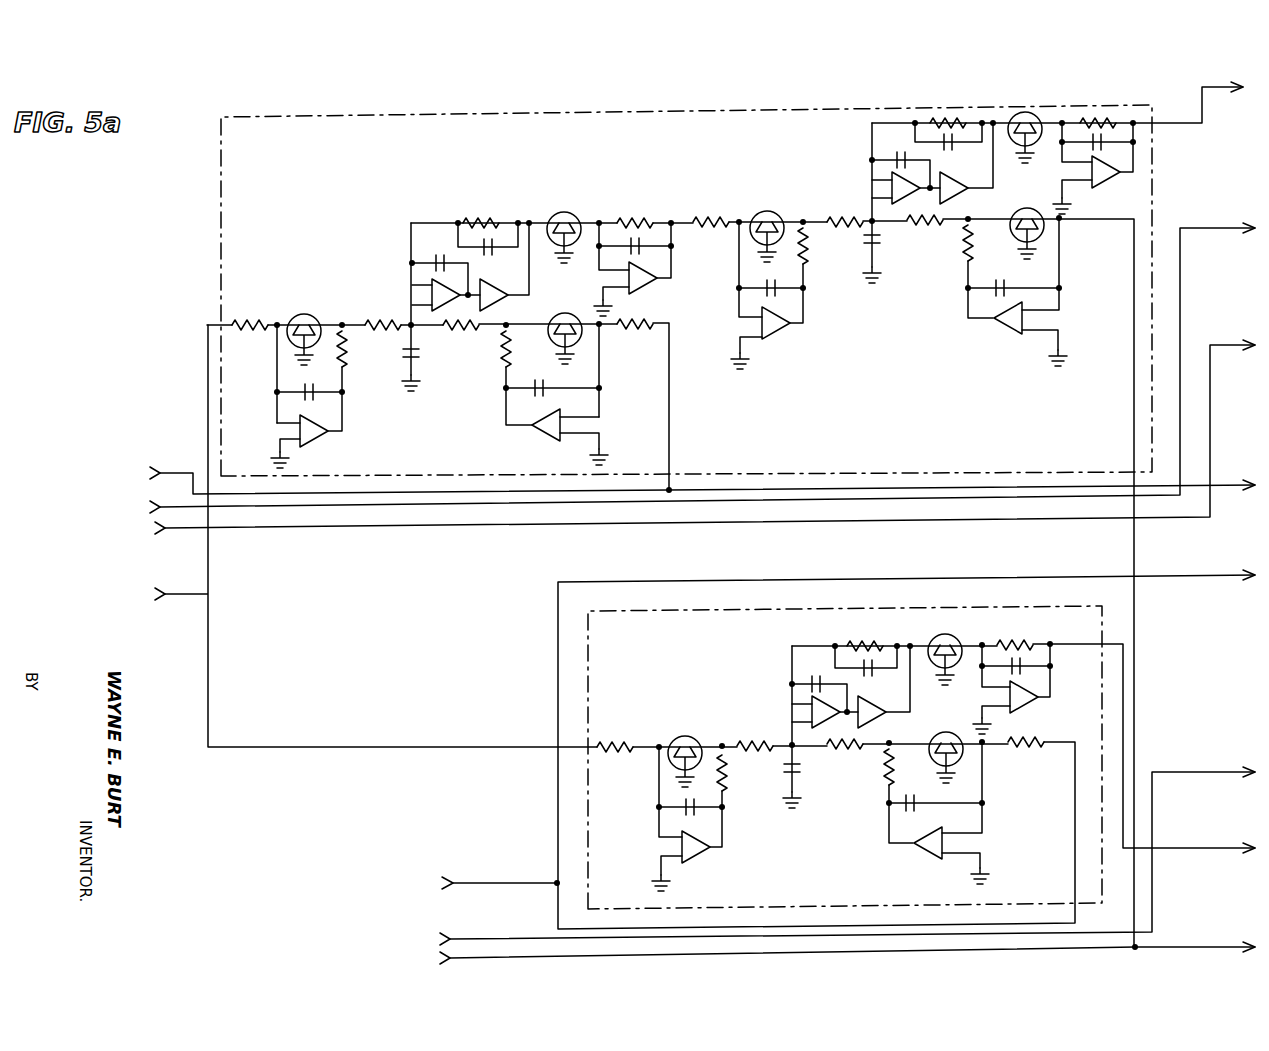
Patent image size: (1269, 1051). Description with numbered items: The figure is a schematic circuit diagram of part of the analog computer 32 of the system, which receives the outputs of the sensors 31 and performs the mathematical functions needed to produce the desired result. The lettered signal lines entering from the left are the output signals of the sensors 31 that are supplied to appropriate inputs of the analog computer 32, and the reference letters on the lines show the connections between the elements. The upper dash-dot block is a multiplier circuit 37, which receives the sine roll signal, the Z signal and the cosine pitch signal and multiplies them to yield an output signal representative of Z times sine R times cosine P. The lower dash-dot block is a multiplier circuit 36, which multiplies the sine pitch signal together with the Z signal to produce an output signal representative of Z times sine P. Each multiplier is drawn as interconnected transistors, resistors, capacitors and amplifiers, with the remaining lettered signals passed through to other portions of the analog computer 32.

The sensors 31 is at (223, 675).
The analog computer 32 is at (128, 210).
The multiplier circuit 36 is at (583, 636).
The multiplier circuit 37 is at (218, 163).